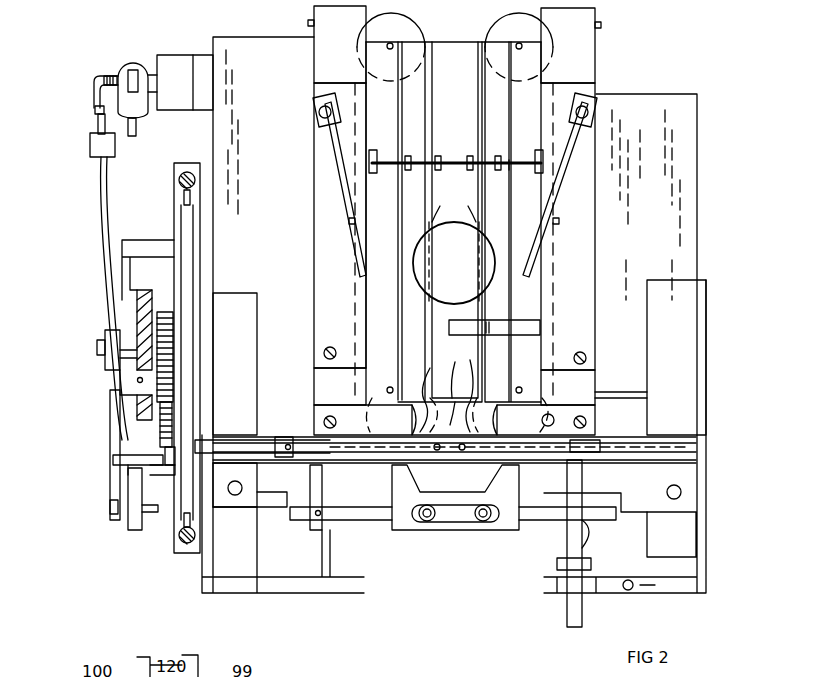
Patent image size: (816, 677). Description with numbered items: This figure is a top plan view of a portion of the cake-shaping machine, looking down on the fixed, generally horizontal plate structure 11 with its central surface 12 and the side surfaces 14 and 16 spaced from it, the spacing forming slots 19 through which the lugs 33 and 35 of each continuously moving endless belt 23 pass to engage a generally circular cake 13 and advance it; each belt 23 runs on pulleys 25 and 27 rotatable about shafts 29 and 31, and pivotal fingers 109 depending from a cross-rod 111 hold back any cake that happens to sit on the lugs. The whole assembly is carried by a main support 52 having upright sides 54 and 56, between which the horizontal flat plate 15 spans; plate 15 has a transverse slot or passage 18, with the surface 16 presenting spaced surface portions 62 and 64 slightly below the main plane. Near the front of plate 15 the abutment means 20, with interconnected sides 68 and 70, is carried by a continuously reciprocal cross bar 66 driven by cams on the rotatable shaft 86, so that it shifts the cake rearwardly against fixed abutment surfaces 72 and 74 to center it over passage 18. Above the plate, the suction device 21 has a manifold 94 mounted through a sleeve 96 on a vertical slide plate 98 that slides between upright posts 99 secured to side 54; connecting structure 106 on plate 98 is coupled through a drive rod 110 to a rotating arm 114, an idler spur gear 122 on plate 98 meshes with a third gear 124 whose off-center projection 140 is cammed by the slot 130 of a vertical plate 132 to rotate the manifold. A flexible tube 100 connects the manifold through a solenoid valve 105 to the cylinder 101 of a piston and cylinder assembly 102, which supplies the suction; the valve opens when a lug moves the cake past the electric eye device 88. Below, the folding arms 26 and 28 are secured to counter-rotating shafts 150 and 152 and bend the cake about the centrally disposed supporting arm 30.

The plate structure 11 is at (456, 42).
The central surface 12 is at (466, 116).
The cake 13 is at (466, 256).
The side surface 14 is at (410, 128).
The flat plate 15 is at (674, 470).
The side surface 16 is at (497, 104).
The passage 18 is at (660, 440).
The slot 19 is at (462, 86).
The abutment means 20 is at (430, 533).
The suction device 21 is at (548, 380).
The belt 23 is at (356, 322).
The pulley 25 is at (372, 372).
The arm 26 is at (368, 455).
The pulley 27 is at (383, 20).
The arm 28 is at (528, 440).
The shaft 29 is at (387, 390).
The supporting arm 30 is at (446, 440).
The shaft 31 is at (387, 47).
The lug 33 is at (454, 203).
The lug 35 is at (350, 222).
The main support 52 is at (708, 298).
The side 54 is at (208, 568).
The side 56 is at (700, 530).
The surface portion 62 is at (457, 393).
The surface portion 64 is at (455, 480).
The cross bar 66 is at (360, 515).
The side 68 is at (400, 480).
The side 70 is at (512, 490).
The fixed abutment surface 72 is at (436, 389).
The fixed abutment surface 74 is at (462, 386).
The rotatable shaft 86 is at (570, 613).
The electric eye device 88 is at (540, 327).
The manifold 94 is at (495, 475).
The sleeve 96 is at (212, 447).
The slide plate 98 is at (190, 480).
The upright post 99 is at (182, 170).
The flexible tube 100 is at (103, 210).
The cylinder 101 is at (135, 118).
The piston and cylinder assembly 102 is at (120, 118).
The solenoid valve 105 is at (92, 150).
The connecting structure 106 is at (128, 465).
The pivotal finger 109 is at (498, 156).
The drive rod 110 is at (108, 405).
The cross-rod 111 is at (521, 168).
The rotating arm 114 is at (130, 525).
The idler spur gear 122 is at (172, 392).
The third gear 124 is at (172, 316).
The slot 130 is at (135, 378).
The vertical plate 132 is at (137, 318).
The projection 140 is at (120, 357).
The shaft 150 is at (315, 437).
The shaft 152 is at (592, 437).